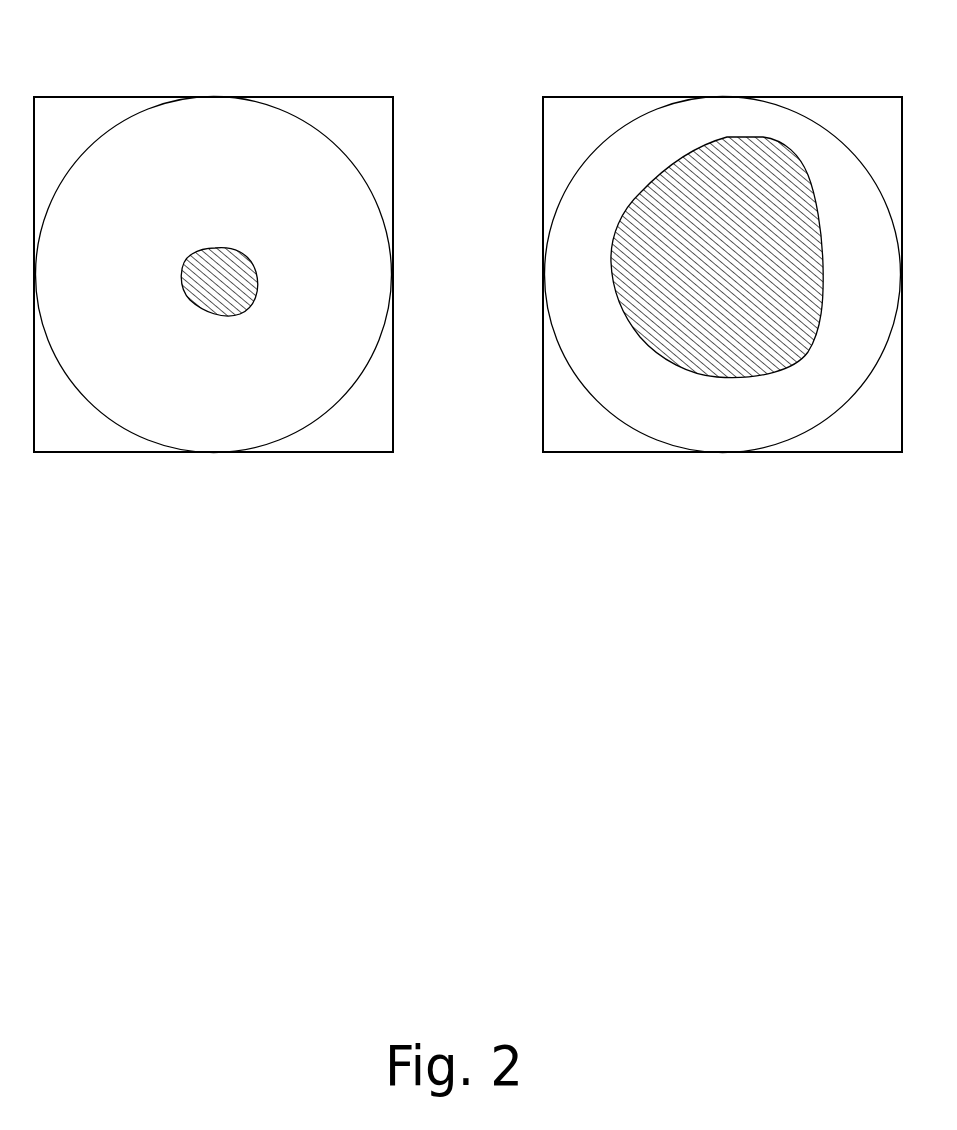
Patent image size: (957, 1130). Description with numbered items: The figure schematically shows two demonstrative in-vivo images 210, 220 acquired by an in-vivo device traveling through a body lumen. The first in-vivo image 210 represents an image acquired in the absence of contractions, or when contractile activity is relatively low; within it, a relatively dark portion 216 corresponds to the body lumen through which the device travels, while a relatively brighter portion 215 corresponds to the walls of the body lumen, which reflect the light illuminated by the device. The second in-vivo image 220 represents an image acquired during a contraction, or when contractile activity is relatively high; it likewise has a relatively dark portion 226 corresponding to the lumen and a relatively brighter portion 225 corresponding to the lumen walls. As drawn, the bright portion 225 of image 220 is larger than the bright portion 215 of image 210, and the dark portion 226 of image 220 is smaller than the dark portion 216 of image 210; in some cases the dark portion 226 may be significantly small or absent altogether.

The in-vivo image 210 is at (813, 97).
The relatively brighter portion 215 is at (670, 387).
The relatively dark portion 216 is at (802, 358).
The in-vivo image 220 is at (303, 97).
The relatively brighter portion 225 is at (162, 387).
The relatively dark portion 226 is at (247, 312).